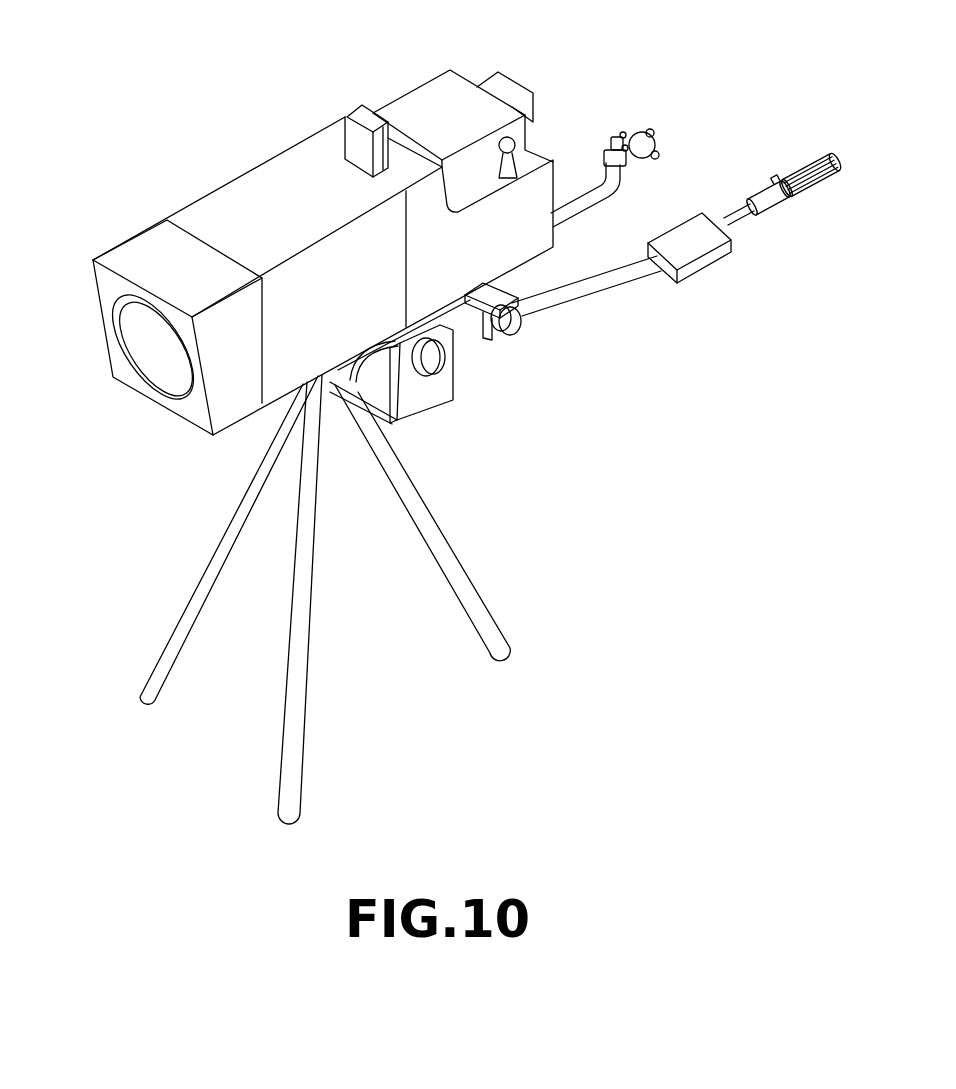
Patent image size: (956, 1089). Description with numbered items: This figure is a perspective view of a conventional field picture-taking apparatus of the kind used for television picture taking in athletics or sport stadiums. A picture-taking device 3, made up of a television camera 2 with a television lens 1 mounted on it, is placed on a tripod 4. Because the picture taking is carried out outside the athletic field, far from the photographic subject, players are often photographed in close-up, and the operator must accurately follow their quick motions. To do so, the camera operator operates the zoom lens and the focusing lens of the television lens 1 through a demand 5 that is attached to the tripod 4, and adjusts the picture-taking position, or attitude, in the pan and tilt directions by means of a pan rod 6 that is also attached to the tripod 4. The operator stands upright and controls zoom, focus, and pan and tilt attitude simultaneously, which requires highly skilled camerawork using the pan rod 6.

The television lens 1 is at (148, 352).
The television camera 2 is at (312, 323).
The picture-taking device 3 is at (221, 214).
The tripod 4 is at (307, 697).
The demand 5 is at (823, 178).
The pan rod 6 is at (640, 128).